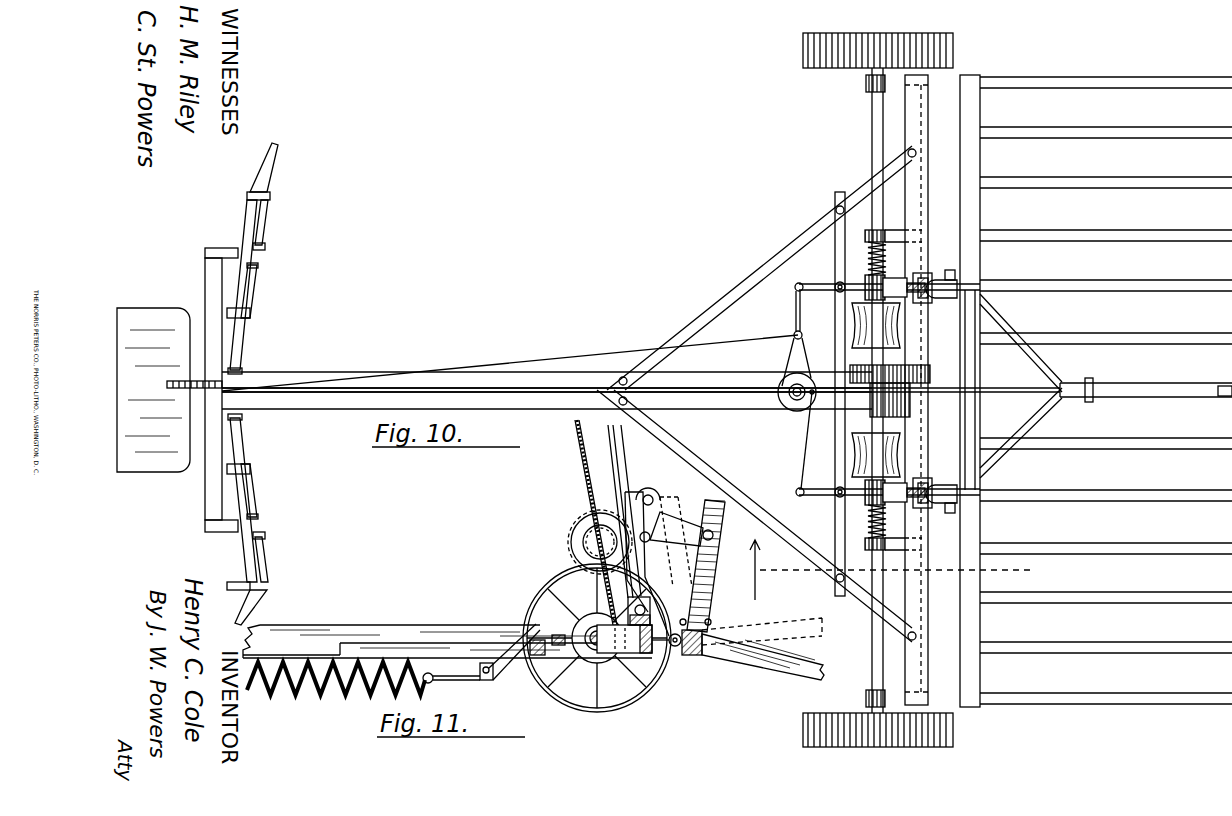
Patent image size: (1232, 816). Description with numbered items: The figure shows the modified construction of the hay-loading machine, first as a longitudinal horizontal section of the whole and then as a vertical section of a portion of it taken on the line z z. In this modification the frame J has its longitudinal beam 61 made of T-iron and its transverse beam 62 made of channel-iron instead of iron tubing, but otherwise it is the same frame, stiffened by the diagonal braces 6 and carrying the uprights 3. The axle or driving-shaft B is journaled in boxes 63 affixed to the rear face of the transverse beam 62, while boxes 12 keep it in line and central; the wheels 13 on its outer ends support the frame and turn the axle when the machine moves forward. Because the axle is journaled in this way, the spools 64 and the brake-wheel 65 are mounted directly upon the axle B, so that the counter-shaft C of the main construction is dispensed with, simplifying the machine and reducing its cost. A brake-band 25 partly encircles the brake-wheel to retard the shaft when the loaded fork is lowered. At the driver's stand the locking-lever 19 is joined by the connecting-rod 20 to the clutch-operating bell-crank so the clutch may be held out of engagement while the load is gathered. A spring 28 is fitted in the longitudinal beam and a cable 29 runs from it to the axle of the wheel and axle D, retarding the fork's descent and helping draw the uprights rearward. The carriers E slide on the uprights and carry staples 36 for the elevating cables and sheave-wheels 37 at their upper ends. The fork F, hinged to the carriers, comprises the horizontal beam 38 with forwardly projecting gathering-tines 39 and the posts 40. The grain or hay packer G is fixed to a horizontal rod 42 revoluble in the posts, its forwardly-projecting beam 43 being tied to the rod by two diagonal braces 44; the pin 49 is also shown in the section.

In FIG. 10, the uprights 3 is at (928, 280).
In FIG. 11, the uprights 3 is at (612, 446).
In FIG. 10, the diagonal braces 6 is at (756, 394).
In FIG. 10, the boxes 12 is at (868, 232).
In FIG. 10, the wheels 13 is at (878, 392).
In FIG. 11, the wheels 13 is at (594, 638).
In FIG. 10, the locking-lever 19 is at (208, 387).
In FIG. 10, the connecting-rod 20 is at (512, 361).
In FIG. 11, the brake-band 25 is at (560, 634).
In FIG. 11, the spring 28 is at (336, 688).
In FIG. 11, the cable 29 is at (481, 660).
In FIG. 11, the staples 36 is at (671, 542).
In FIG. 11, the sheave-wheels 37 is at (649, 487).
In FIG. 10, the horizontal beam 38 is at (980, 158).
In FIG. 11, the horizontal beam 38 is at (665, 636).
In FIG. 10, the gathering-tines 39 is at (1106, 401).
In FIG. 11, the gathering-tines 39 is at (763, 652).
In FIG. 11, the posts 40 is at (714, 566).
In FIG. 10, the horizontal rod 42 is at (975, 367).
In FIG. 10, the projecting beam 43 is at (1146, 396).
In FIG. 10, the diagonal braces 44 is at (1021, 386).
In FIG. 11, the pin 49 is at (704, 530).
In FIG. 10, the longitudinal beam 61 is at (547, 389).
In FIG. 11, the longitudinal beam 61 is at (447, 630).
In FIG. 10, the transverse beam 62 is at (928, 138).
In FIG. 10, the boxes 63 is at (885, 391).
In FIG. 10, the spools 64 is at (852, 325).
In FIG. 10, the brake-wheel 65 is at (870, 278).
In FIG. 10, the axle or driving-shaft B is at (872, 135).
In FIG. 10, the counter-shaft C is at (905, 365).
In FIG. 10, the wheel and axle D is at (912, 403).
In FIG. 11, the wheel and axle D is at (572, 532).
In FIG. 10, the carriers E is at (941, 400).
In FIG. 11, the carriers E is at (647, 564).
In FIG. 11, the fork F is at (708, 606).
In FIG. 10, the grain or hay packer G is at (1148, 375).
In FIG. 10, the frame J is at (674, 386).
In FIG. 10, the section line z z is at (890, 572).